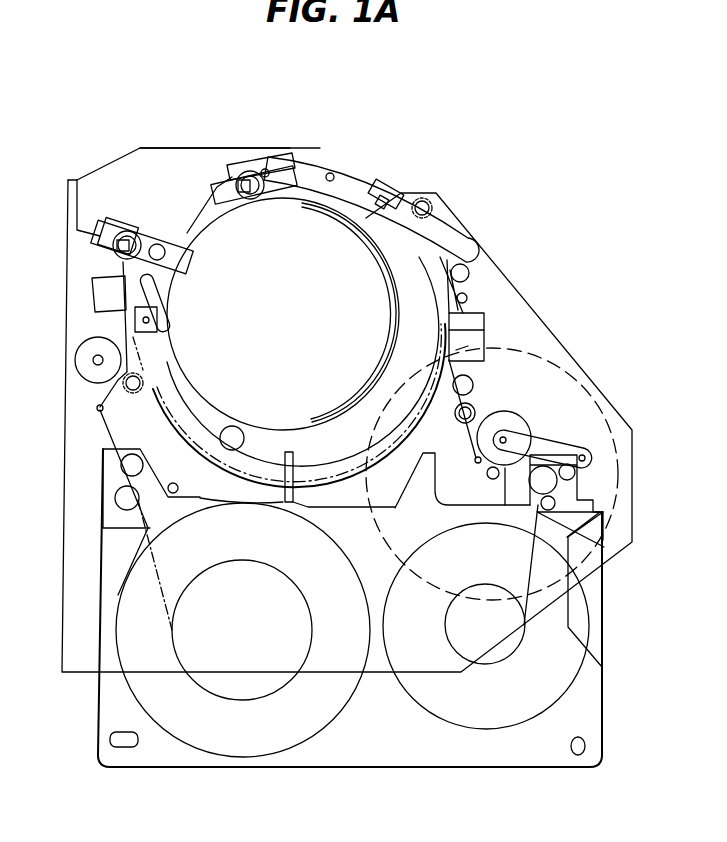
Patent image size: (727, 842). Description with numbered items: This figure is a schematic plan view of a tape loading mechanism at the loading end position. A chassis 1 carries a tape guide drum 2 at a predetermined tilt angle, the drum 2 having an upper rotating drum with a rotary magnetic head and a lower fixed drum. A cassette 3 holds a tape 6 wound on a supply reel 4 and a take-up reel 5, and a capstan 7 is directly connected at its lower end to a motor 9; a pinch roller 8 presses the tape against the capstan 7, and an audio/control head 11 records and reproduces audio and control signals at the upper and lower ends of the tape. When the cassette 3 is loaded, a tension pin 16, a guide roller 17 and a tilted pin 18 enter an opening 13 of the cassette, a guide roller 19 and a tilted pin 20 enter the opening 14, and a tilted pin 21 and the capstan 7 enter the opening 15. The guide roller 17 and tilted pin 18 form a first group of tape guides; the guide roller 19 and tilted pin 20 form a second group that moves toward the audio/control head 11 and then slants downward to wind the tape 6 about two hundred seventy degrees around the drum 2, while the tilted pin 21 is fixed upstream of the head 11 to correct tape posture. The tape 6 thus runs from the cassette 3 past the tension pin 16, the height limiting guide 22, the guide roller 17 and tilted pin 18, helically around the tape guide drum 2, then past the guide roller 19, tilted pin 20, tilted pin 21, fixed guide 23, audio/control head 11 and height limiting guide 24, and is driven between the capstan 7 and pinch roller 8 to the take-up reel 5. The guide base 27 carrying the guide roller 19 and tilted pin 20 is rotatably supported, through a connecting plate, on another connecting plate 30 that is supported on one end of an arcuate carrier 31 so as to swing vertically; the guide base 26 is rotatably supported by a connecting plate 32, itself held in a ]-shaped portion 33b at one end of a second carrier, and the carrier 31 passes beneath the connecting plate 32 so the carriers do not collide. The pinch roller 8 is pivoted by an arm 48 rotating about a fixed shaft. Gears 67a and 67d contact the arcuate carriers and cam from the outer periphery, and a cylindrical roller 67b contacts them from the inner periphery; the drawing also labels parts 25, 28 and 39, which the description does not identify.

The chassis 1 is at (68, 258).
The tape guide drum 2 is at (283, 314).
The cassette 3 is at (372, 765).
The supply reel 4 is at (222, 745).
The take-up reel 5 is at (480, 725).
The tape 6 is at (95, 296).
The capstan 7 is at (500, 480).
The pinch roller 8 is at (512, 420).
The motor 9 is at (617, 447).
The audio/control head 11 is at (484, 330).
The opening 13 is at (188, 490).
The opening 14 is at (346, 508).
The opening 15 is at (476, 482).
The tension pin 16 is at (96, 408).
The guide roller 17 is at (140, 228).
The tilted pin 18 is at (160, 246).
The guide roller 19 is at (255, 168).
The tilted pin 20 is at (268, 178).
The tilted pin 21 is at (469, 272).
The height limiting guide 22 is at (85, 365).
The fixed guide 23 is at (467, 298).
The height limiting guide 24 is at (474, 390).
The pivot pin 25 is at (477, 462).
The guide base 26 is at (170, 278).
The guide base 27 is at (318, 165).
The chassis plate 28 is at (158, 160).
The connecting plate 30 is at (372, 185).
The carrier 31 is at (433, 257).
The connecting plate 32 is at (160, 302).
The ]-shaped portion 33b is at (157, 324).
The gear 39 is at (137, 395).
The arm 48 is at (560, 440).
The gear 67a is at (428, 200).
The roller 67b is at (236, 426).
The gear 67d is at (470, 350).